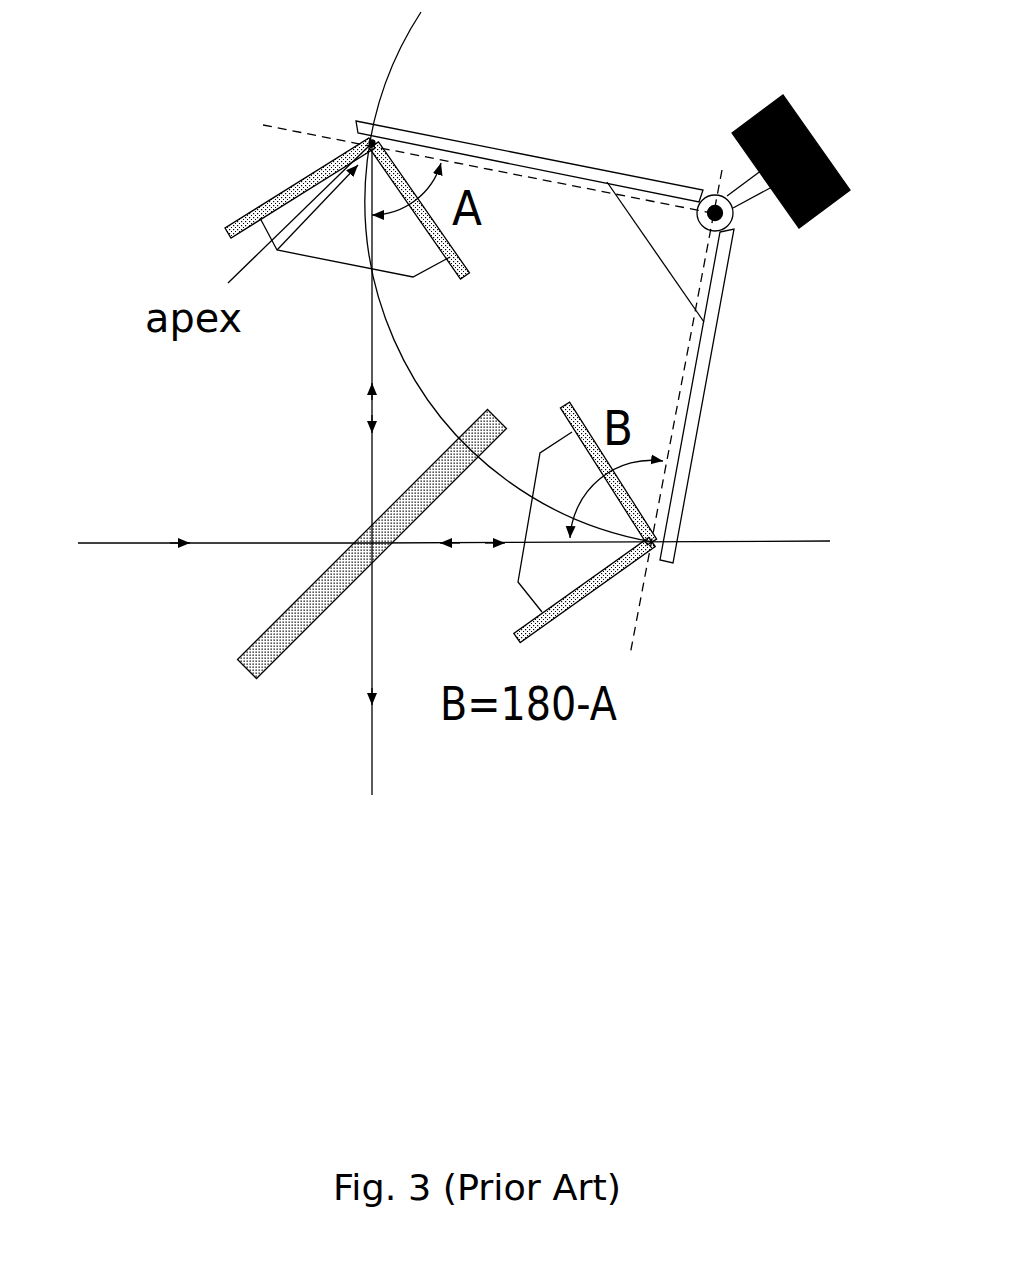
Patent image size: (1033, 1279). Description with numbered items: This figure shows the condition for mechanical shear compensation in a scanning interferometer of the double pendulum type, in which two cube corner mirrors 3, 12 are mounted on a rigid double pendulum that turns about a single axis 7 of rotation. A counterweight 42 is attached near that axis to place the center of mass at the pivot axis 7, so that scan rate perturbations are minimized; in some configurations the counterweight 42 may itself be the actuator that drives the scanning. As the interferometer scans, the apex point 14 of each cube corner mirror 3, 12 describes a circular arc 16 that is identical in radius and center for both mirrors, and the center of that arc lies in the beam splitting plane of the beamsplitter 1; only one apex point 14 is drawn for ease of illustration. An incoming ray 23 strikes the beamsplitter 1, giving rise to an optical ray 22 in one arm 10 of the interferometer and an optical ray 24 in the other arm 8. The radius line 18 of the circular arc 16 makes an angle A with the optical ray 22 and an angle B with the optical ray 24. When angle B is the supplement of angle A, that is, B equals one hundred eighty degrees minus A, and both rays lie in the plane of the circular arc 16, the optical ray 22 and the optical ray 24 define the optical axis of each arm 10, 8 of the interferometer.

The beamsplitter 1 is at (297, 628).
The cube corner mirror 3 is at (597, 595).
The single axis of rotation 7 is at (737, 214).
The arm 8 is at (700, 383).
The arm 10 is at (528, 152).
The cube corner mirror 12 is at (240, 212).
The apex point 14 is at (380, 127).
The circular arc 16 is at (425, 385).
The radius line 18 is at (297, 132).
The optical ray 22 is at (368, 400).
The incoming ray 23 is at (223, 543).
The optical ray 24 is at (465, 547).
The counterweight 42 is at (732, 133).